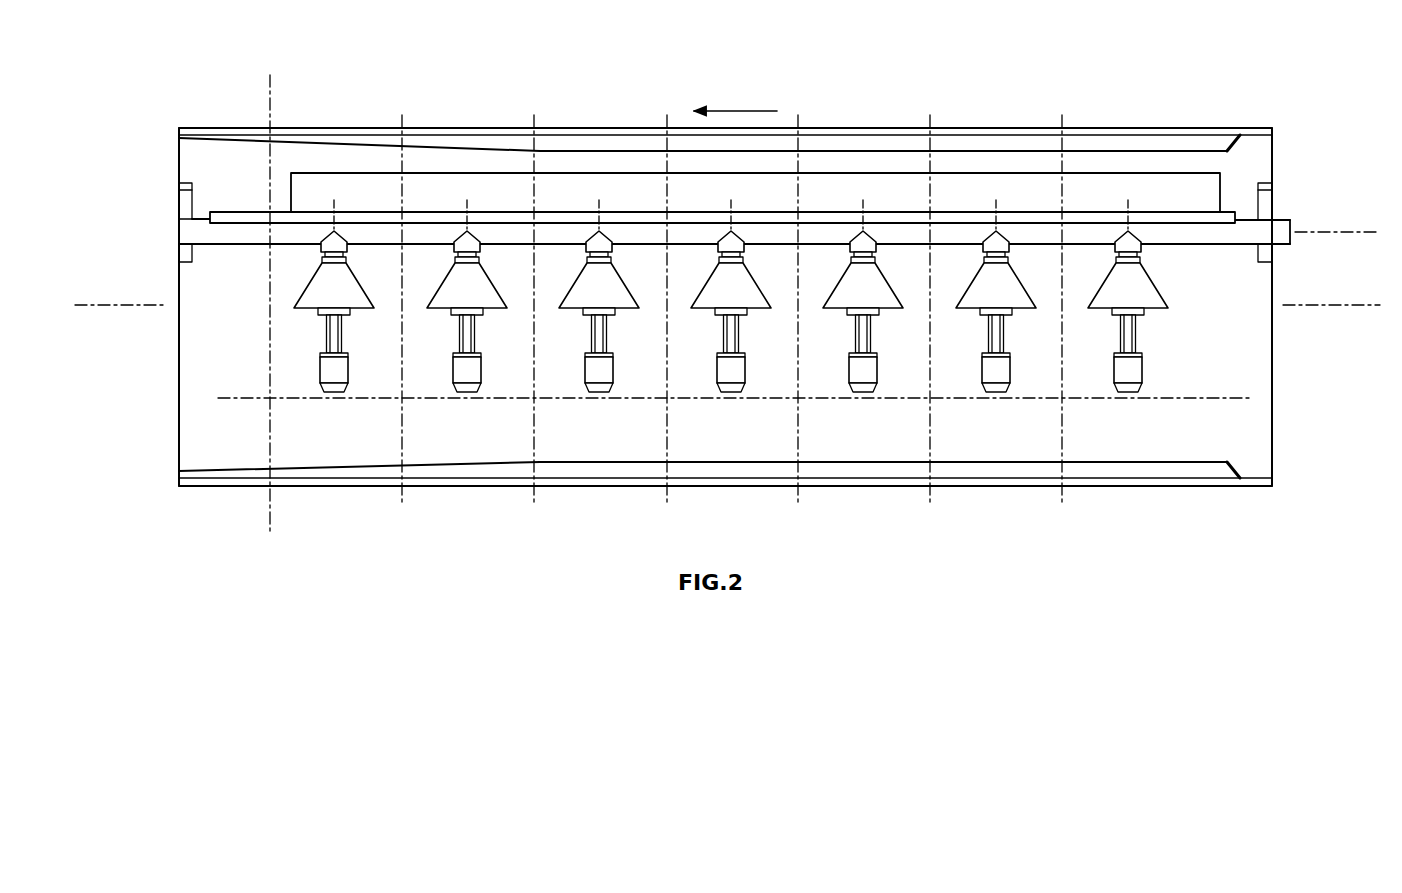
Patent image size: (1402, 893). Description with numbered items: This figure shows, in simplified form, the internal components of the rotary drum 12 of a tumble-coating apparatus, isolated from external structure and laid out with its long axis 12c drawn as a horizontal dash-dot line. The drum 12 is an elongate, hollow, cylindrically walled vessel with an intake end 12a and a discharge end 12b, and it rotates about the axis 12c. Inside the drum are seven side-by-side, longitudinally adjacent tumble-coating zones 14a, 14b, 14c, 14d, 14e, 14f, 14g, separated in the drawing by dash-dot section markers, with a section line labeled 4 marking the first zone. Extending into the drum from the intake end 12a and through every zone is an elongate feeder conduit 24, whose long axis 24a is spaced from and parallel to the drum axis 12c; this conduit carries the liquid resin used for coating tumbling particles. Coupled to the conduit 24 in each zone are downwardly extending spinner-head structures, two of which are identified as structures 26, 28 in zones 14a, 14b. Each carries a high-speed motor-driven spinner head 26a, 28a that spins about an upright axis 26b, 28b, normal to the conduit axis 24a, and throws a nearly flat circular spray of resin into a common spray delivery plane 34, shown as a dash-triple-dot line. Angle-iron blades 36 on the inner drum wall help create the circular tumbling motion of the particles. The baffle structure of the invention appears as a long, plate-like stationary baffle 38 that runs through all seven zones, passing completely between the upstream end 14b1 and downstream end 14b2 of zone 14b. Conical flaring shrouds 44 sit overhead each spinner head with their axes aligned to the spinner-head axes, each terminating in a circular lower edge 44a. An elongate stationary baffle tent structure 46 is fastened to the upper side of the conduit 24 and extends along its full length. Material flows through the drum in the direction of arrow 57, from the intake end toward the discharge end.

The section line 4- 4 is at (266, 97).
The rotary drum 12 is at (866, 122).
The intake end 12a is at (1273, 150).
The discharge end 12b is at (178, 425).
The long axis 12c is at (1333, 312).
The tumble-coating zone 14a is at (321, 366).
The tumble-coating zone 14b is at (442, 356).
The upstream end of zone 14b1 is at (532, 163).
The downstream end of zone 14b2 is at (398, 163).
The tumble-coating zone 14c is at (597, 442).
The tumble-coating zone 14d is at (728, 442).
The tumble-coating zone 14e is at (858, 442).
The tumble-coating zone 14f is at (990, 442).
The tumble-coating zone 14g is at (1122, 442).
The feeder conduit 24 is at (1204, 252).
The long axis of conduit 24a is at (1350, 232).
The spinner-head structure 26 is at (312, 365).
The spinner head 26a is at (318, 392).
The spinner-head axis 26b is at (335, 291).
The spinner-head structure 28 is at (444, 365).
The spinner head 28a is at (450, 392).
The spinner-head axis 28b is at (473, 280).
The spray delivery plane 34 is at (1237, 397).
The angle-iron blades 36 is at (612, 140).
The baffle structure 38 is at (318, 190).
The baffle shrouds 44 is at (298, 292).
The circular edge 44a is at (306, 313).
The baffle tent structure 46 is at (766, 208).
The arrow 57 is at (733, 110).